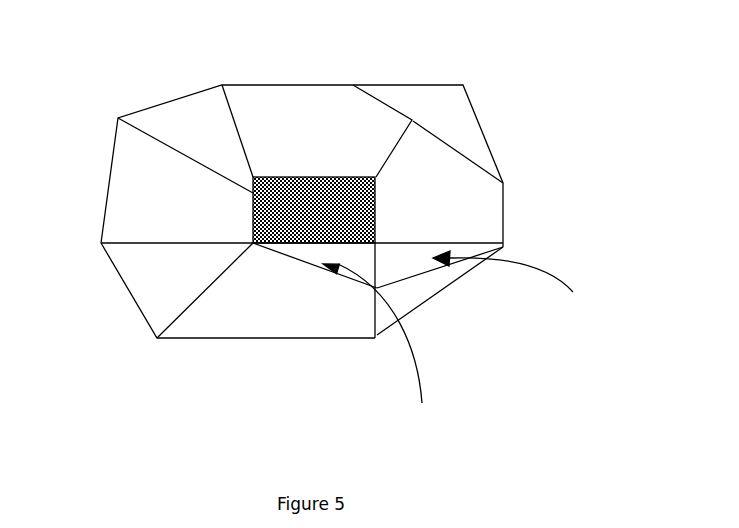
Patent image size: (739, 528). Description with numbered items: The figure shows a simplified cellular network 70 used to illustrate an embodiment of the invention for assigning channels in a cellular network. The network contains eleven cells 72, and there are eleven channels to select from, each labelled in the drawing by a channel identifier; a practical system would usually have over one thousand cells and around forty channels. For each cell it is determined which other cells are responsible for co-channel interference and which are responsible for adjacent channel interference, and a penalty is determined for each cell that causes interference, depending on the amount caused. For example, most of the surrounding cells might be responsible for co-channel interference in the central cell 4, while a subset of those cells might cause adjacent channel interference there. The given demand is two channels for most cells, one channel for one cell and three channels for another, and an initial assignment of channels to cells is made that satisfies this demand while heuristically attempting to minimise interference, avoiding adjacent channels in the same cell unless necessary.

The cellular network 70 is at (372, 225).
The cells 72 is at (252, 102).
The cell 4 is at (314, 210).